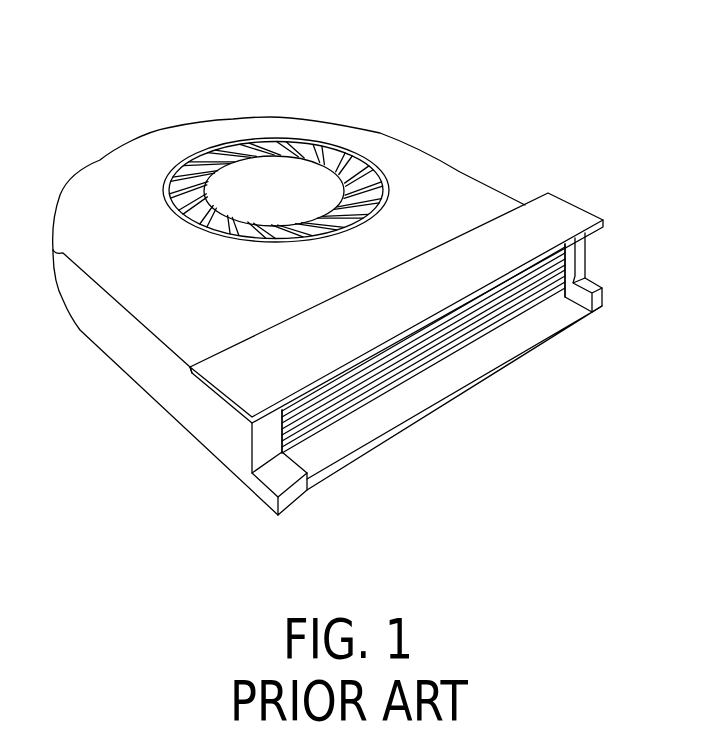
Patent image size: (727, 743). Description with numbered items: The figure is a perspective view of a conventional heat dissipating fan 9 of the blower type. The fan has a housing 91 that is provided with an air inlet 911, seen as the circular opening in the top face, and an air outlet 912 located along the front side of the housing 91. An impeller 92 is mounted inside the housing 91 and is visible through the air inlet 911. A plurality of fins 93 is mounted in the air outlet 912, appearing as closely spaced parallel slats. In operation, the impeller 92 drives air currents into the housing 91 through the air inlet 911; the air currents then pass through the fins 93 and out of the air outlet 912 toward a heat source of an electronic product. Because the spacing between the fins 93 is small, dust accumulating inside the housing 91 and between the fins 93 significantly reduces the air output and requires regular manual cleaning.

The heat dissipating fan 9 is at (352, 271).
The housing 91 is at (450, 183).
The air inlet 911 is at (276, 135).
The air outlet 912 is at (467, 357).
The impeller 92 is at (280, 177).
The fins 93 is at (550, 293).